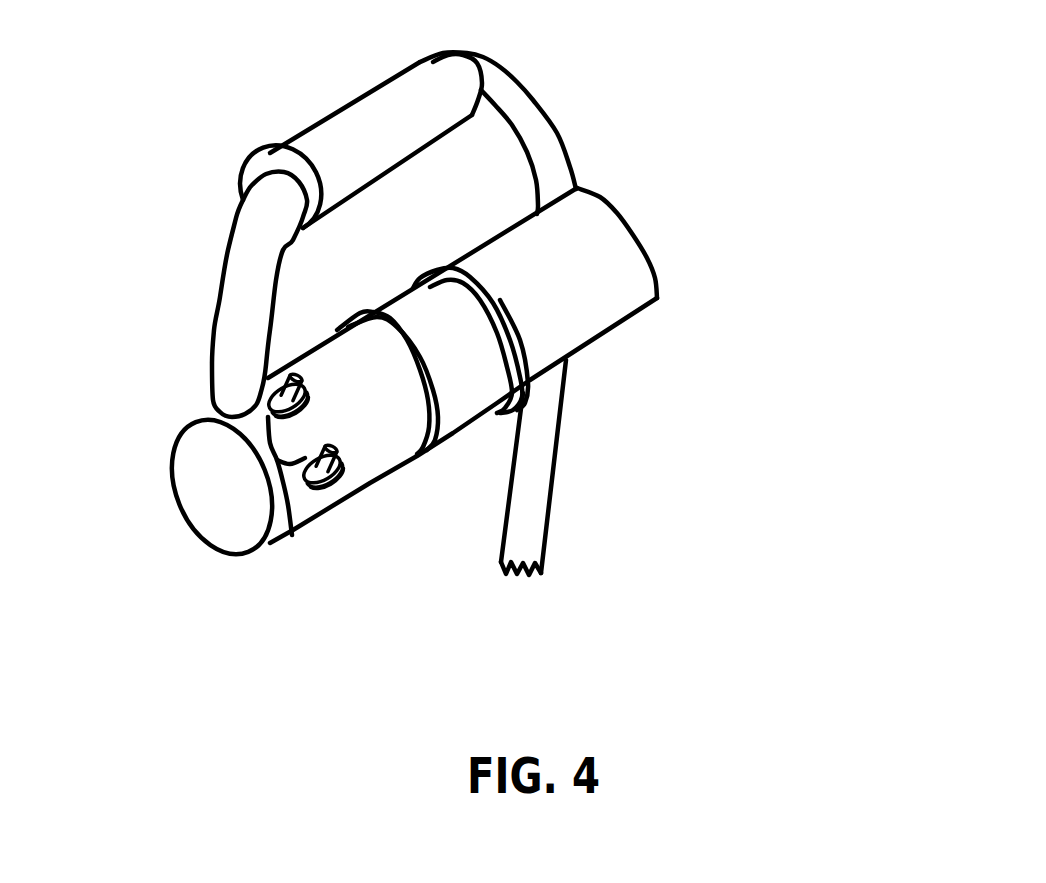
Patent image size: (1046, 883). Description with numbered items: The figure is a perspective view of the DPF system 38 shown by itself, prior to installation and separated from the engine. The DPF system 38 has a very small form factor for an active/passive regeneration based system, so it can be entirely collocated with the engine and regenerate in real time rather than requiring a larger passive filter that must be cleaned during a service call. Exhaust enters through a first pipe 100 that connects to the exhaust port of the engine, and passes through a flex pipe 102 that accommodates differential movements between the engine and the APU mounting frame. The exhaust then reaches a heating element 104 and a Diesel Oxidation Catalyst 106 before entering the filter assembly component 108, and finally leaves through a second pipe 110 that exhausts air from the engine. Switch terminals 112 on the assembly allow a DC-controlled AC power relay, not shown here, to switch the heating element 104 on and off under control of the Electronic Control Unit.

The DPF system 38 is at (893, 84).
The first pipe 100 is at (435, 63).
The flex pipe 102 is at (390, 98).
The heating element 104 is at (203, 477).
The Diesel Oxidation Catalyst 106 is at (462, 380).
The filter assembly component 108 is at (602, 277).
The second pipe 110 is at (540, 460).
The switch terminals 112 is at (292, 537).